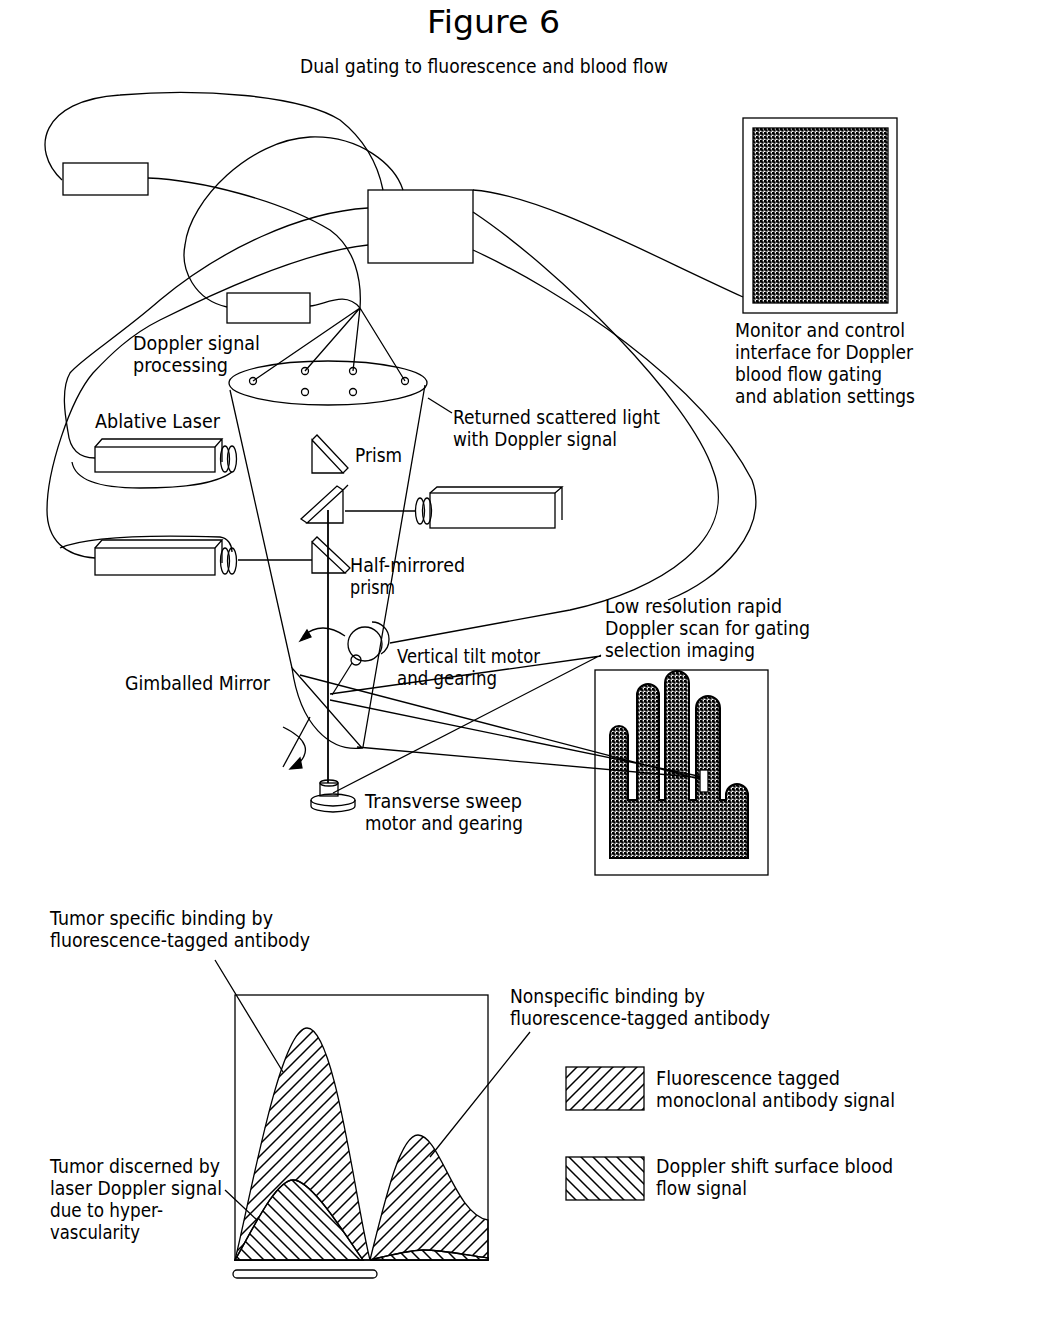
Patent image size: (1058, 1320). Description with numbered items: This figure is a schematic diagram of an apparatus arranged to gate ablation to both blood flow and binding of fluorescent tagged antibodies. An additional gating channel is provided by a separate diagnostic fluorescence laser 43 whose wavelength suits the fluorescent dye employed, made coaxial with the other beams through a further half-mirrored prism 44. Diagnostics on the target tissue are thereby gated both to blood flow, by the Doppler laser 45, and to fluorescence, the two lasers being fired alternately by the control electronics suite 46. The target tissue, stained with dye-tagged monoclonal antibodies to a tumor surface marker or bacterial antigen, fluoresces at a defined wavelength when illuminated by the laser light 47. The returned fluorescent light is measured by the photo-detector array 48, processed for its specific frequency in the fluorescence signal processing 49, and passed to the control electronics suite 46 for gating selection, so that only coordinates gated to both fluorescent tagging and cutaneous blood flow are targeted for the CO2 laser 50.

The control electronics suite 46 is at (436, 180).
The fluorescence signal processing 49 is at (97, 214).
The photo-detector array 48 is at (372, 290).
The half-mirrored prism 44 is at (340, 500).
The fluorescence diagnostic laser 43 is at (477, 495).
The Doppler laser 45 is at (203, 554).
The laser light illuminating target tissue 47 is at (681, 772).
The CO2 laser targeting 50 is at (305, 1287).